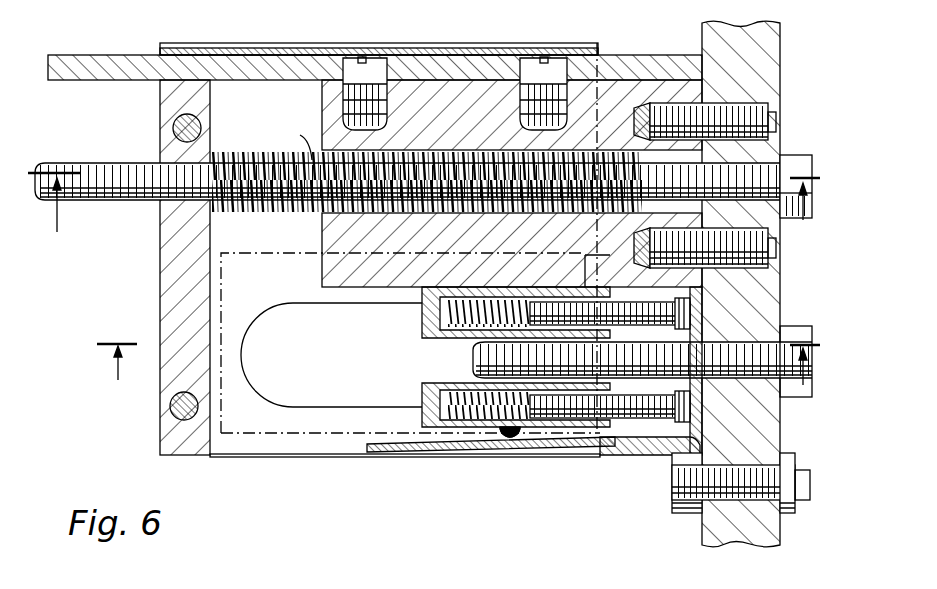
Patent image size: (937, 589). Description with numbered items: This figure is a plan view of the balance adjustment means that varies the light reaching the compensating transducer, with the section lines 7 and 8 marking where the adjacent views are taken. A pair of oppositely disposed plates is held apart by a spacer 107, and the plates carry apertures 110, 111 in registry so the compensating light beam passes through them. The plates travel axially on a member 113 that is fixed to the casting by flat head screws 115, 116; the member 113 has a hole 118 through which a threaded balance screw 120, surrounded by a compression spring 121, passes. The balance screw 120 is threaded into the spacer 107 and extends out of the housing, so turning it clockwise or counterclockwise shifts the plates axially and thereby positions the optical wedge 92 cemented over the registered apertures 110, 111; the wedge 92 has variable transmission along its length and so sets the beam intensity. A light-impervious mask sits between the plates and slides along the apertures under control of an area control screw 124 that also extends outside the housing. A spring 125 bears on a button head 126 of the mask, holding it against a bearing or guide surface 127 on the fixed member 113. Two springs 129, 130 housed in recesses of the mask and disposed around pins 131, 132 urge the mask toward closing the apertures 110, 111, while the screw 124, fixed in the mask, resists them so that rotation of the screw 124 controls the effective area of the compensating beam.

The section line 7- 7 is at (458, 354).
The section line 8- 8 is at (424, 205).
The optical wedge 92 is at (258, 432).
The spacer 107 is at (165, 268).
The aperture 110 is at (331, 355).
The aperture 111 is at (258, 320).
The member 113 is at (322, 98).
The flat head screw 115 is at (772, 108).
The flat head screw 116 is at (348, 60).
The hole 118 is at (312, 160).
The threaded balance screw 120 is at (146, 205).
The compression spring 121 is at (280, 210).
The area control screw 124 is at (598, 432).
The spring 125 is at (392, 452).
The button head 126 is at (510, 443).
The bearing or guide surface 127 is at (393, 288).
The spring 129 is at (690, 300).
The spring 130 is at (445, 396).
The pin 131 is at (445, 332).
The pin 132 is at (642, 420).